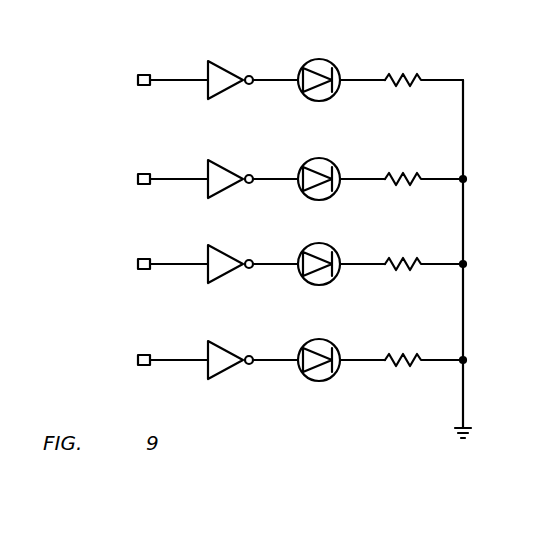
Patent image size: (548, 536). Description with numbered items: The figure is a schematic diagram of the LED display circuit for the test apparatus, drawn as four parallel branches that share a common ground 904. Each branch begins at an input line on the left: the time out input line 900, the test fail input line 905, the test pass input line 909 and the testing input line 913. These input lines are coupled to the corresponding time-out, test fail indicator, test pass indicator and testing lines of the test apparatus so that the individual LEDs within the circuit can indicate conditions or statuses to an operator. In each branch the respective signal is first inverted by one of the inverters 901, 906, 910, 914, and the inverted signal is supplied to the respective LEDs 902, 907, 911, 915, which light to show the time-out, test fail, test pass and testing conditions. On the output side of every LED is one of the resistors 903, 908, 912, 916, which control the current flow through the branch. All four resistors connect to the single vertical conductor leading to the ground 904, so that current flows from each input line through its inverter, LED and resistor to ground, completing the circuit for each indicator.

The time out input line 900 is at (152, 78).
The inverter 901 is at (226, 71).
The LED 902 is at (320, 61).
The resistor 903 is at (403, 75).
The ground 904 is at (464, 131).
The test fail input line 905 is at (152, 177).
The inverter 906 is at (226, 170).
The LED 907 is at (320, 160).
The resistor 908 is at (403, 174).
The test pass input line 909 is at (152, 262).
The inverter 910 is at (228, 274).
The LED 911 is at (323, 283).
The resistor 912 is at (403, 259).
The testing input line 913 is at (152, 358).
The inverter 914 is at (228, 370).
The LED 915 is at (323, 379).
The resistor 916 is at (403, 355).